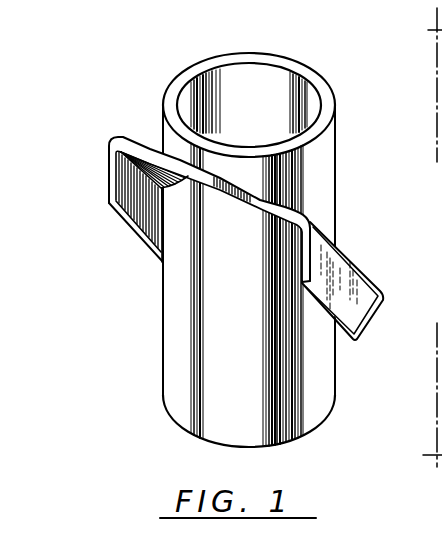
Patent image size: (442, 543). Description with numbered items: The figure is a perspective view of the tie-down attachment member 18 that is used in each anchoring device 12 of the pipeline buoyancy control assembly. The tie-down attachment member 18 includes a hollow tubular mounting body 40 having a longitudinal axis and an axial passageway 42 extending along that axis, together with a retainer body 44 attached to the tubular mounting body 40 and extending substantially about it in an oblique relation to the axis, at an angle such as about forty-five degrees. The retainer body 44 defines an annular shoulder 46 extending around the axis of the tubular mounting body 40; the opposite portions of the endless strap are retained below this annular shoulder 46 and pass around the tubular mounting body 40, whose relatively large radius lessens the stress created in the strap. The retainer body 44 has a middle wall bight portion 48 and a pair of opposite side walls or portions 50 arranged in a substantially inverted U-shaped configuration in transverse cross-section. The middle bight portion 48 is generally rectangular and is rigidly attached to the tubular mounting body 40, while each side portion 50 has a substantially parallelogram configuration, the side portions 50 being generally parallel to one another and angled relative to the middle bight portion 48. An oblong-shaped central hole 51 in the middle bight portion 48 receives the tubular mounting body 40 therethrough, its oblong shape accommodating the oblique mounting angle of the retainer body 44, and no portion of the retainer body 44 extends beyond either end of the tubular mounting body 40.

The anchoring device 12 is at (270, 226).
The tie-down attachment member 18 is at (237, 209).
The hollow tubular mounting body 40 is at (323, 72).
The axial passageway 42 is at (263, 110).
The retainer body 44 is at (370, 263).
The annular shoulder 46 is at (267, 212).
The middle wall bight portion 48 is at (152, 142).
The side walls or portions 50 is at (110, 188).
The oblong-shaped central hole 51 is at (160, 242).